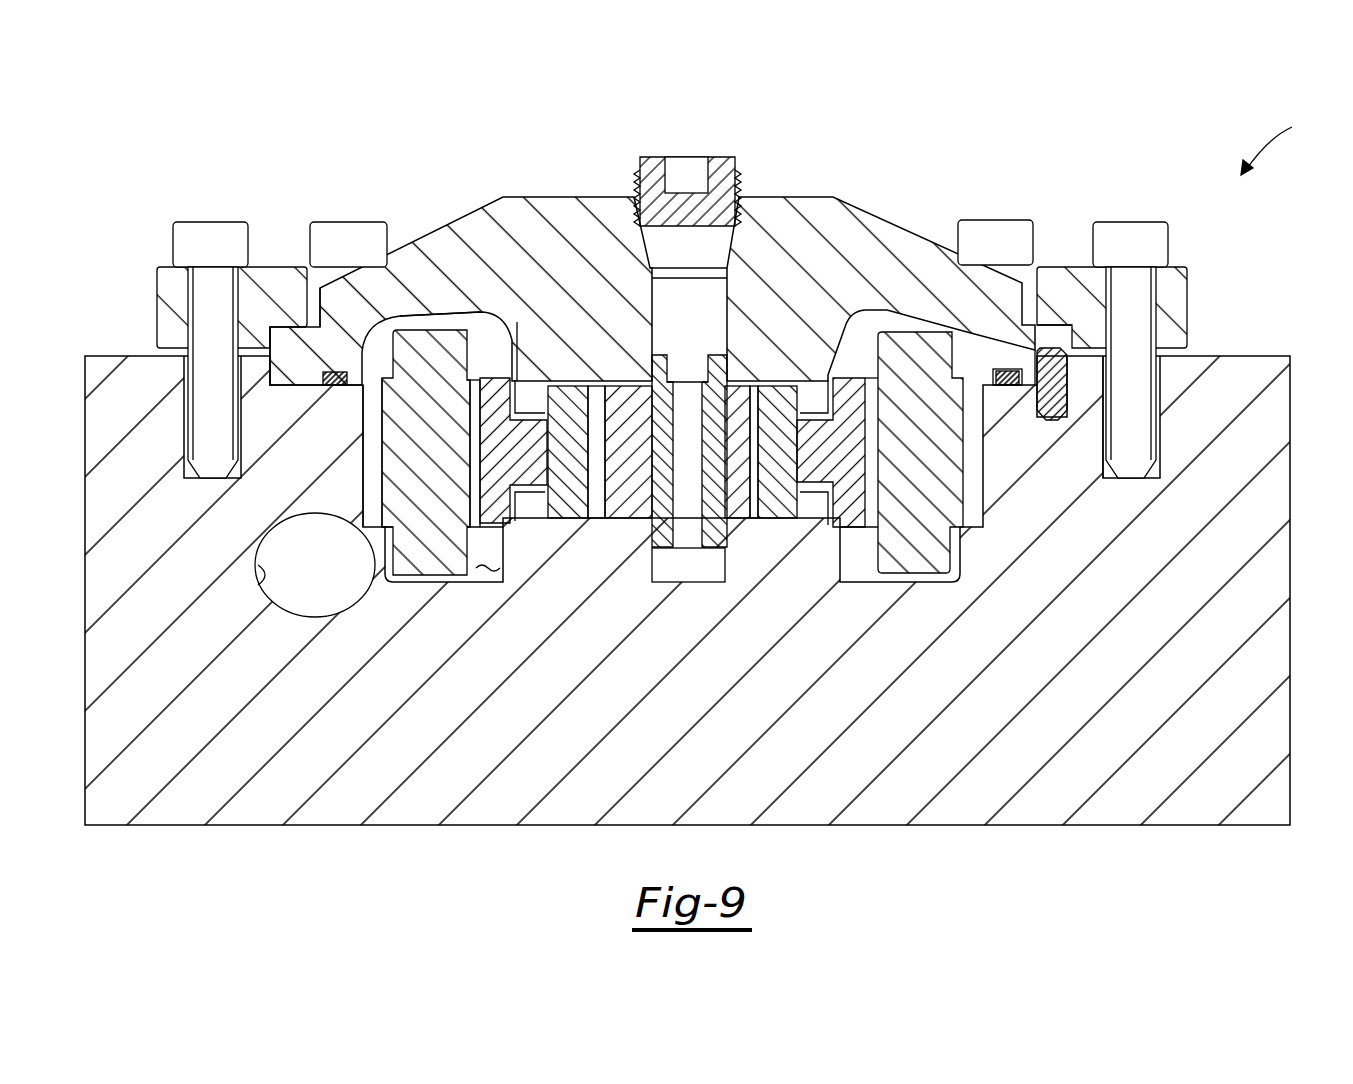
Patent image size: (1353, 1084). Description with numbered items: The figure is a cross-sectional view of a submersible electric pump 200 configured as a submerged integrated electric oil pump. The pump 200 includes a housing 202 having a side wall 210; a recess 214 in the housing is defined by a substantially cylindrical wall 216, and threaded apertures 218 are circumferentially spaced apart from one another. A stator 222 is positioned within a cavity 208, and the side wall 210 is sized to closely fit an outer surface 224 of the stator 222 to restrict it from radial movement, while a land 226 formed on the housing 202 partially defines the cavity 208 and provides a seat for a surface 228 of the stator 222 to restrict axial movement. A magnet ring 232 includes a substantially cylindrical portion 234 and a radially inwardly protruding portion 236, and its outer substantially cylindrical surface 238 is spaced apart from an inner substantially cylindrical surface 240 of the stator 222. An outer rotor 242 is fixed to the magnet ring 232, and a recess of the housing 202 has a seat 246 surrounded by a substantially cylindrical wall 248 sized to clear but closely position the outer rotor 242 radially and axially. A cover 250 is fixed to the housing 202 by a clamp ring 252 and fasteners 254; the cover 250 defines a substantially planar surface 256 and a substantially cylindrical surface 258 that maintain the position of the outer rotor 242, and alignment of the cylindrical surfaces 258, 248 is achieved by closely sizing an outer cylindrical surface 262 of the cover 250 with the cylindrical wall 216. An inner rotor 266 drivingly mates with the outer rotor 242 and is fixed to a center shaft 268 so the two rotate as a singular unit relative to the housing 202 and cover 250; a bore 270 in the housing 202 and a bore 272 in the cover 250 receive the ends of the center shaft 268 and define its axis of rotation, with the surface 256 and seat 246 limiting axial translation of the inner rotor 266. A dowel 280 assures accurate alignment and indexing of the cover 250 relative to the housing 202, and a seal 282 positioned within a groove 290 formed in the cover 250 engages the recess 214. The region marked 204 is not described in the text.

The pump 200 is at (1285, 144).
The housing 202 is at (313, 802).
The recess 204 is at (268, 584).
The cavity 208 is at (488, 554).
The side wall 210 is at (383, 457).
The recess 214 is at (272, 360).
The substantially cylindrical wall 216 is at (1052, 392).
The threaded apertures 218 is at (1150, 410).
The stator 222 is at (432, 348).
The outer surface 224 is at (380, 452).
The land 226 is at (468, 520).
The surface 228 is at (372, 548).
The magnet ring 232 is at (497, 408).
The substantially cylindrical portion 234 is at (432, 516).
The radially inwardly protruding portion 236 is at (531, 472).
The outer substantially cylindrical surface 238 is at (460, 348).
The inner substantially cylindrical surface 240 is at (482, 474).
The outer rotor 242 is at (574, 413).
The seat 246 is at (594, 496).
The substantially cylindrical wall 248 is at (592, 498).
The cover 250 is at (835, 195).
The clamp ring 252 is at (1188, 300).
The fasteners 254 is at (1160, 244).
The substantially planar surface 256 is at (774, 388).
The substantially cylindrical surface 258 is at (788, 412).
The outer cylindrical surface 262 is at (1073, 340).
The inner rotor 266 is at (620, 397).
The center shaft 268 is at (723, 537).
The bore 270 is at (705, 583).
The bore 272 is at (723, 327).
The dowel 280 is at (1006, 372).
The seal 282 is at (333, 375).
The groove 290 is at (323, 373).